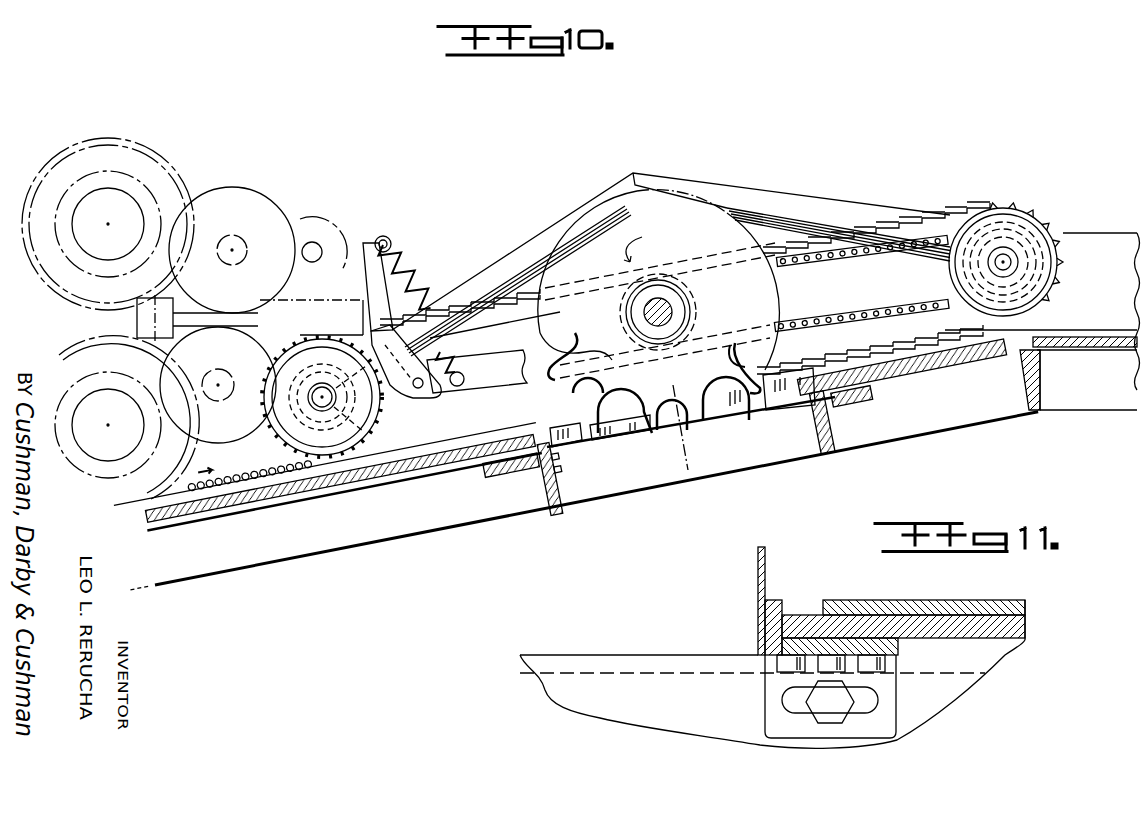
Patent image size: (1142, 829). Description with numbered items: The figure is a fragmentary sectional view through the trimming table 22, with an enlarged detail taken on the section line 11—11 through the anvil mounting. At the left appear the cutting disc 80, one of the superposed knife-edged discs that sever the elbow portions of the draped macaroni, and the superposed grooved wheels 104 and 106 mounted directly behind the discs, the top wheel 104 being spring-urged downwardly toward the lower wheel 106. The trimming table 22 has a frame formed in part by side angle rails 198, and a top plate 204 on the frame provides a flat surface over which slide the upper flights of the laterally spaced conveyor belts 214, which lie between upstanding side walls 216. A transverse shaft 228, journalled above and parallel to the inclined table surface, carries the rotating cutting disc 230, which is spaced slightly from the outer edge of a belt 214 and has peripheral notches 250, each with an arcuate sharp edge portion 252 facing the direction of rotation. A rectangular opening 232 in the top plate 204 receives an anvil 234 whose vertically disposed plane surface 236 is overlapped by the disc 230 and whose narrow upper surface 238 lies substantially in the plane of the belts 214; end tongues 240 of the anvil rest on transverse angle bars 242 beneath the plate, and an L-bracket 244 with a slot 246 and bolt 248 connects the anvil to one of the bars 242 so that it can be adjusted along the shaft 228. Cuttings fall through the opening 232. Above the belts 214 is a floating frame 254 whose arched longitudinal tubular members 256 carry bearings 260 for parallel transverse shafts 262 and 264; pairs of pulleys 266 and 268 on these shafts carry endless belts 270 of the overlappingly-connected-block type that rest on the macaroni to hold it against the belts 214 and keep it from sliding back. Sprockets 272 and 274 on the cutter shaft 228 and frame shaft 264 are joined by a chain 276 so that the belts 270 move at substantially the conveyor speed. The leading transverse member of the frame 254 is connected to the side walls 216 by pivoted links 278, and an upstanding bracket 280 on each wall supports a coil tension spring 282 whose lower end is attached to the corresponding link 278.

In FIG. 10, the section line 11— 11 is at (656, 380).
In FIG. 10, the trimming table 22 is at (1058, 216).
In FIG. 10, the cutting disc 80 is at (146, 150).
In FIG. 10, the top wheel 104 is at (276, 200).
In FIG. 10, the lower wheel 106 is at (222, 455).
In FIG. 10, the side angle rails 198 is at (444, 524).
In FIG. 10, the top plate 204 is at (323, 505).
In FIG. 11, the top plate 204 is at (800, 615).
In FIG. 10, the belts 214 is at (247, 483).
In FIG. 11, the belts 214 is at (860, 600).
In FIG. 10, the upstanding side walls 216 is at (1105, 232).
In FIG. 10, the transverse shaft 228 is at (644, 311).
In FIG. 10, the rotating cutting disc 230 is at (592, 225).
In FIG. 11, the rotating cutting disc 230 is at (757, 565).
In FIG. 10, the rectangular opening 232 is at (812, 455).
In FIG. 11, the rectangular opening 232 is at (650, 658).
In FIG. 10, the anvil 234 is at (745, 424).
In FIG. 11, the anvil 234 is at (762, 650).
In FIG. 10, the vertically disposed plane surface 236 is at (770, 410).
In FIG. 11, the vertically disposed plane surface 236 is at (762, 625).
In FIG. 10, the upper surface 238 is at (604, 445).
In FIG. 11, the upper surface 238 is at (776, 603).
In FIG. 10, the end tongues 240 is at (512, 472).
In FIG. 10, the transverse angle bars 242 is at (546, 520).
In FIG. 11, the transverse angle bars 242 is at (541, 688).
In FIG. 10, the L-bracket 244 is at (566, 465).
In FIG. 11, the L-bracket 244 is at (768, 697).
In FIG. 11, the slot 246 is at (880, 700).
In FIG. 10, the bolt 248 is at (576, 500).
In FIG. 11, the bolt 248 is at (814, 710).
In FIG. 10, the peripheral notches 250 is at (515, 378).
In FIG. 10, the arcuate sharp edge portion 252 is at (603, 388).
In FIG. 10, the floating frame 254 is at (785, 206).
In FIG. 10, the arched longitudinal tubular members 256 is at (506, 265).
In FIG. 10, the bearings 260 is at (1050, 300).
In FIG. 10, the transverse shaft 262 is at (322, 411).
In FIG. 10, the frame shaft 264 is at (1012, 268).
In FIG. 10, the pulleys 266 is at (343, 397).
In FIG. 10, the pulleys 268 is at (938, 288).
In FIG. 10, the endless belt 270 is at (915, 212).
In FIG. 10, the sprocket 272 is at (738, 295).
In FIG. 10, the sprocket 274 is at (965, 278).
In FIG. 10, the chain 276 is at (808, 318).
In FIG. 10, the links 278 is at (497, 385).
In FIG. 10, the upstanding bracket 280 is at (367, 270).
In FIG. 10, the coil tension spring 282 is at (410, 290).